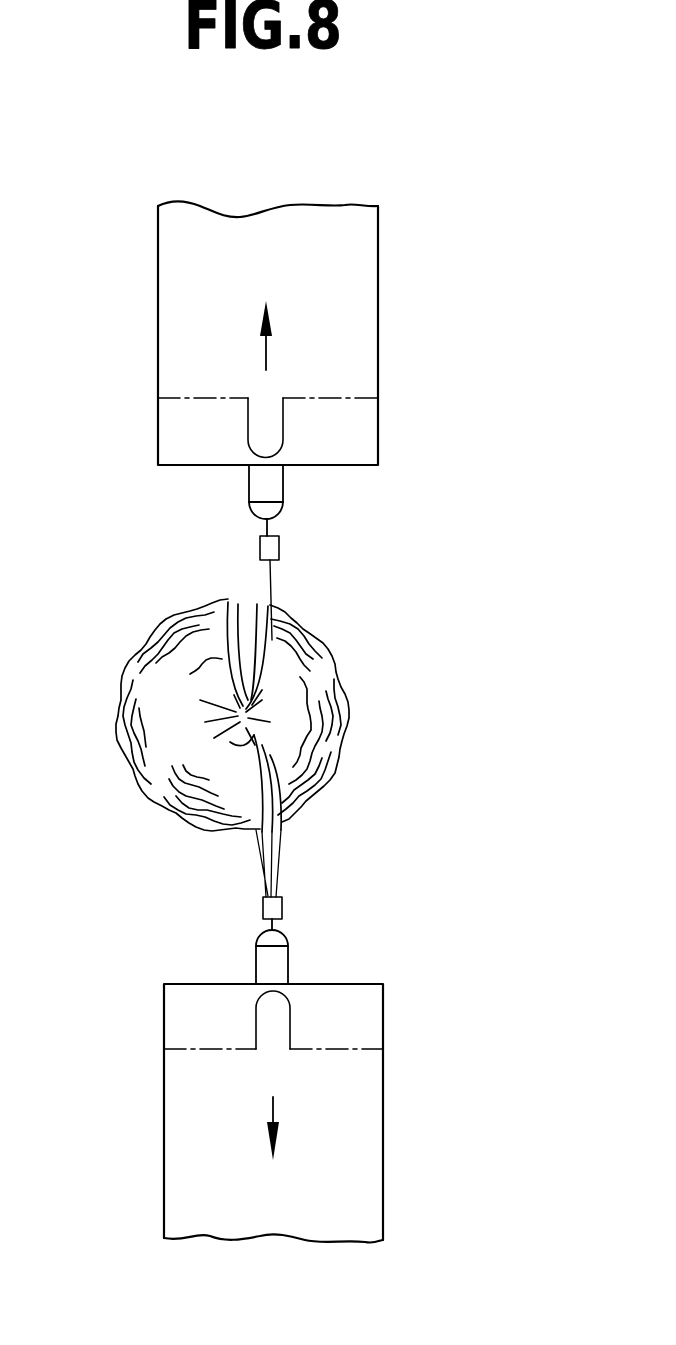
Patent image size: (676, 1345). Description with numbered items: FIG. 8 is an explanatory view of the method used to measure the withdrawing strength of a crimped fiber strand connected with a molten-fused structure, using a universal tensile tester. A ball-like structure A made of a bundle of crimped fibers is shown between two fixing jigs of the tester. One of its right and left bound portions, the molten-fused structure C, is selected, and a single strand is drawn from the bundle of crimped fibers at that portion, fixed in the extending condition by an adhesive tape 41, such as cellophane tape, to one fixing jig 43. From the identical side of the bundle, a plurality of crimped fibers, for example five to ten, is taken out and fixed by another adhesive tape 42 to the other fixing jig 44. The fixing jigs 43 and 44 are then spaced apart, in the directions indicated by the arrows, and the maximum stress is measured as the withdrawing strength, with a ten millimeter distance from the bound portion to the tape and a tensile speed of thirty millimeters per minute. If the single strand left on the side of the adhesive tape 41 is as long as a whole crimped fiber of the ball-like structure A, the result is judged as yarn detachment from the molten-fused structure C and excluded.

The adhesive tape 41 is at (280, 541).
The adhesive tape 42 is at (283, 908).
The fixing jig 43 is at (368, 432).
The fixing jig 44 is at (360, 1018).
The ball-like structure A is at (388, 713).
The molten-fused structure C is at (240, 713).